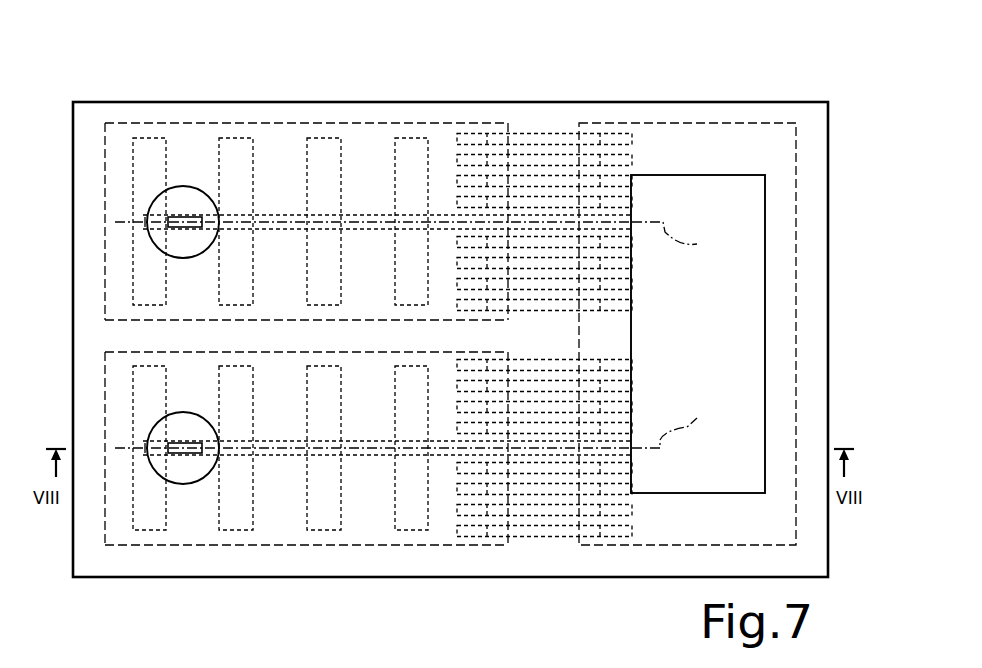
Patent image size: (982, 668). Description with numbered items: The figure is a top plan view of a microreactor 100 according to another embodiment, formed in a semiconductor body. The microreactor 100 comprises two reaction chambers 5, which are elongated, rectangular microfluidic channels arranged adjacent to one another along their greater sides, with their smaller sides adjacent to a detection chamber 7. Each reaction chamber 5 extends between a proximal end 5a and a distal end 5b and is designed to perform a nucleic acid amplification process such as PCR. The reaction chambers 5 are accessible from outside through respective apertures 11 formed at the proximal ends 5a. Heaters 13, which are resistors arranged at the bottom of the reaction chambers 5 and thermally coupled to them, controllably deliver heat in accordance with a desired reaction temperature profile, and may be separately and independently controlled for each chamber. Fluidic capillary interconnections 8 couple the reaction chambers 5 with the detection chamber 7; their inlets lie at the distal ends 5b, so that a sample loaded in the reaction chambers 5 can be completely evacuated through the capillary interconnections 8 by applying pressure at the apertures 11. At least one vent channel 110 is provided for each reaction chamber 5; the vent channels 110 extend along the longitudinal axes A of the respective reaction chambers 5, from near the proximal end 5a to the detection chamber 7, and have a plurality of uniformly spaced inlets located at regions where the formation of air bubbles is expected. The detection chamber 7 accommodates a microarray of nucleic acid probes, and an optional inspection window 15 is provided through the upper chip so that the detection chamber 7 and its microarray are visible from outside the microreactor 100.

The microreactor 100 is at (716, 70).
The detection chamber 7 is at (678, 535).
The inspection window 15 is at (756, 377).
The reaction chambers 5 is at (279, 142).
The proximal ends 5a is at (100, 406).
The distal ends 5b is at (497, 114).
The heaters 13 is at (218, 140).
The capillary interconnections 8 is at (567, 137).
The vent channels 110 is at (432, 222).
The apertures 11 is at (150, 224).
The longitudinal axes A is at (670, 335).